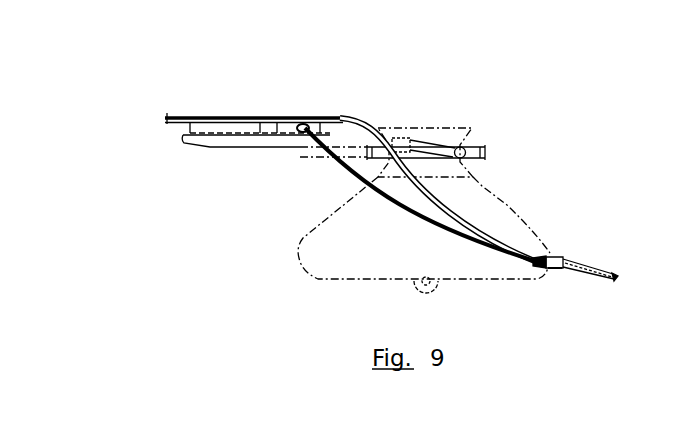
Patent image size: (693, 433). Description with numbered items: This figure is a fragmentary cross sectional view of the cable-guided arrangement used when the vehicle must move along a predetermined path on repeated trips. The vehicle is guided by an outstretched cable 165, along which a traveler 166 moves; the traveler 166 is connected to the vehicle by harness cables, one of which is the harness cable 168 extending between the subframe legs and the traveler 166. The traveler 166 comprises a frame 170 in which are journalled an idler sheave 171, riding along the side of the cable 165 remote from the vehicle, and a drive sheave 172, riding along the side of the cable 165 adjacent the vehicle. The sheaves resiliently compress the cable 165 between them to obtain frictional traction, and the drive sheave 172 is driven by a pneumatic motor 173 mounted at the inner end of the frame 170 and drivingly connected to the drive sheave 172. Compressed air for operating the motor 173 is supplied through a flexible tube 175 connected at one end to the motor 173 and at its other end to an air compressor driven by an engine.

The cable 165 is at (605, 272).
The traveler 166 is at (604, 268).
The harness cable 168 is at (413, 220).
The frame 170 is at (567, 256).
The idler sheave 171 is at (593, 260).
The drive sheave 172 is at (573, 270).
The pneumatic motor 173 is at (548, 270).
The flexible tube 175 is at (446, 213).